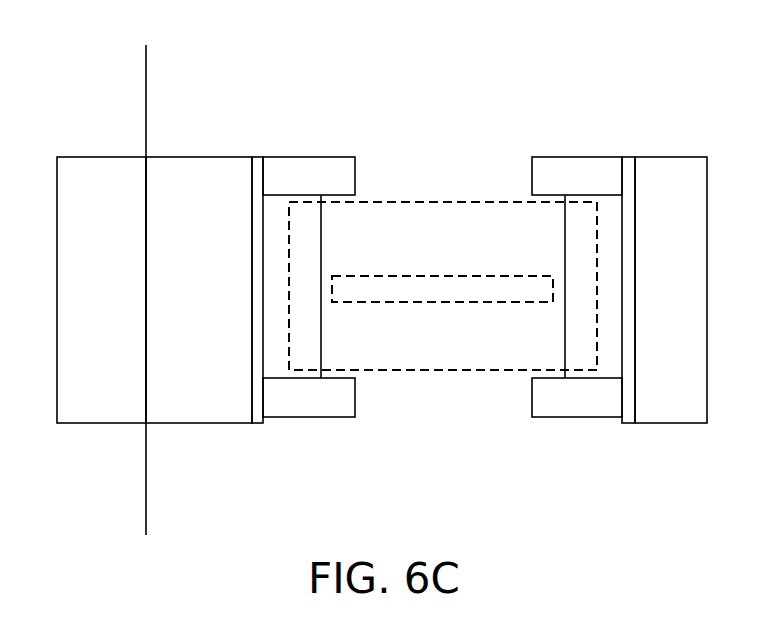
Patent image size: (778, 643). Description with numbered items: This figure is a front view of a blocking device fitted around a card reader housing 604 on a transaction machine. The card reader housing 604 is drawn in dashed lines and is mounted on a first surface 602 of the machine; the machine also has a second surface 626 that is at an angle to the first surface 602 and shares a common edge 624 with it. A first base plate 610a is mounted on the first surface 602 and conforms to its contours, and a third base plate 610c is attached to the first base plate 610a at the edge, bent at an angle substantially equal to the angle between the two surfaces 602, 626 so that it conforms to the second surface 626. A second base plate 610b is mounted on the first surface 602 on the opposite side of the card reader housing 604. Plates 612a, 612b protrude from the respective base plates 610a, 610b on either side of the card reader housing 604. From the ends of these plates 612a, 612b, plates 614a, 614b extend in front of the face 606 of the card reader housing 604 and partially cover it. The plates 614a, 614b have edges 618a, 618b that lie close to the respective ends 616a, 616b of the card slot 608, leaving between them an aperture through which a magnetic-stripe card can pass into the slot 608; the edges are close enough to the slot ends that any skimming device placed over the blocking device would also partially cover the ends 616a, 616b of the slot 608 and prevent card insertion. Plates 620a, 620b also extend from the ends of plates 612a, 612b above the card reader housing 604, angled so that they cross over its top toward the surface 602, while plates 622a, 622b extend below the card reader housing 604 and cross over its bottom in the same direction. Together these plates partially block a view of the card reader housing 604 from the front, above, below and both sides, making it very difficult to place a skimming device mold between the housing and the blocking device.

The surface 602 is at (172, 114).
The card reader housing 604 is at (446, 201).
The face 606 is at (421, 254).
The card slot 608 is at (442, 289).
The first base plate 610a is at (169, 301).
The second base plate 610b is at (643, 301).
The third base plate 610c is at (72, 301).
The plate 612a is at (258, 424).
The plate 612b is at (630, 424).
The plate 614a is at (322, 232).
The plate 614b is at (564, 232).
The end of card slot 616a is at (331, 297).
The end of card slot 616b is at (554, 297).
The edge 618a is at (322, 357).
The edge 618b is at (564, 357).
The plate 620a is at (311, 178).
The plate 620b is at (579, 178).
The plate 622a is at (333, 401).
The plate 622b is at (551, 402).
The edge 624 is at (147, 58).
The second surface 626 is at (75, 114).